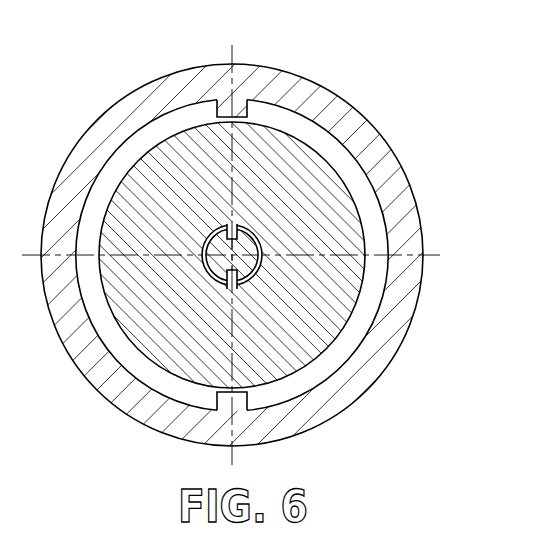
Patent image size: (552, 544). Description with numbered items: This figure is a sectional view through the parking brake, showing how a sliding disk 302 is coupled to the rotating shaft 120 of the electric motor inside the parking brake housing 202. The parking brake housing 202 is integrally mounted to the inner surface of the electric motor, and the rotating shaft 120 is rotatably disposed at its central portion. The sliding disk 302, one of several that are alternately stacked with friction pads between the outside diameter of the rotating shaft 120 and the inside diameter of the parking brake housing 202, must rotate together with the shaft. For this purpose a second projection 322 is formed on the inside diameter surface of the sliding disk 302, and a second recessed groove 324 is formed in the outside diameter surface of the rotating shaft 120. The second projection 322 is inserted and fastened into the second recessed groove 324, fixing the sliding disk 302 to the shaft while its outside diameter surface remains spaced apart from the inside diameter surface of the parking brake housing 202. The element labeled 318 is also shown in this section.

The rotating shaft 120 is at (207, 266).
The parking brake housing 202 is at (373, 147).
The sliding disk 302 is at (345, 230).
The key tab 318 is at (247, 106).
The second projection 322 is at (235, 292).
The second recessed groove 324 is at (249, 272).